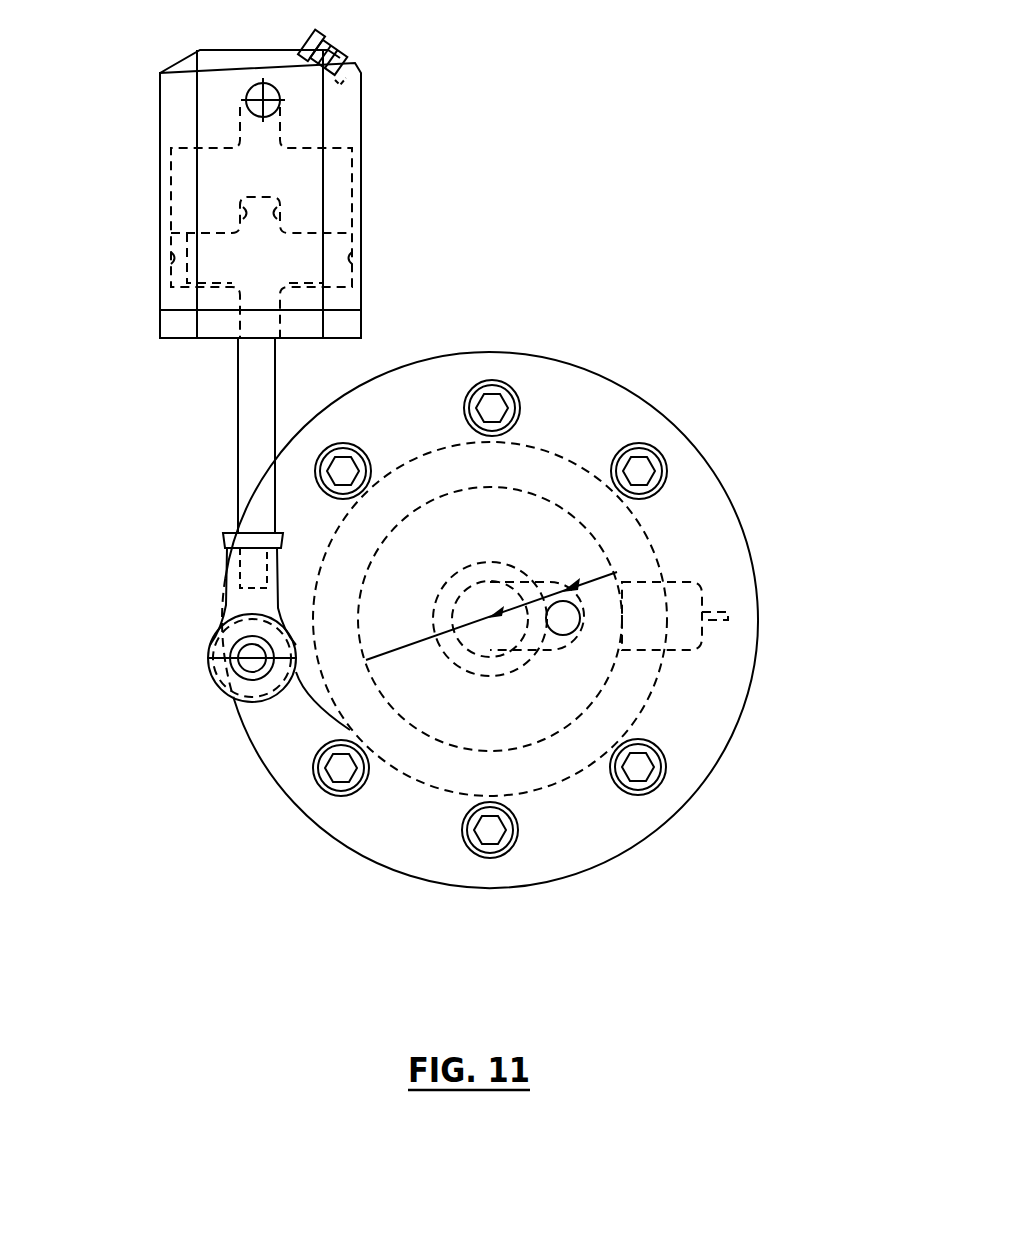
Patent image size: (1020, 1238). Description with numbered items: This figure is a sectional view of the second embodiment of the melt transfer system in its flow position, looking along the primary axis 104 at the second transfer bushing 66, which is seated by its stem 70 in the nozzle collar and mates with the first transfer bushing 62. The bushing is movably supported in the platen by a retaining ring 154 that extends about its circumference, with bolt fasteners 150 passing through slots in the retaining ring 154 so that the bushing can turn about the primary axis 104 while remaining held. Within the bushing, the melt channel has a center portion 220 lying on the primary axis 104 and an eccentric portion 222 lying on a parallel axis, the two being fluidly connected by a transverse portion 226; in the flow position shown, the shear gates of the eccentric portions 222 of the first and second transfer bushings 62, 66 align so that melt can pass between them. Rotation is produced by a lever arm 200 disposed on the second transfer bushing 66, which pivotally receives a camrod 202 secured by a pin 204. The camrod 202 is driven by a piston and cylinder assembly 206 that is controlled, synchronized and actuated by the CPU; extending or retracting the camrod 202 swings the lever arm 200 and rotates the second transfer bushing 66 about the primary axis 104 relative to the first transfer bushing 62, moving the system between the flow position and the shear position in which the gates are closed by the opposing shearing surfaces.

The piston and cylinder assembly 206 is at (358, 212).
The camrod 202 is at (258, 413).
The pin 204 is at (253, 652).
The lever arm 200 is at (303, 675).
The bolt fasteners 150 is at (501, 410).
The stems 70 is at (512, 562).
The retaining rings 154 is at (677, 523).
The primary axis 104 is at (566, 590).
The eccentric portion 222 is at (565, 620).
The transverse portion 226 is at (535, 638).
The first transfer bushing 62 is at (521, 772).
The second transfer bushing 66 is at (393, 750).
The center portion 220 is at (488, 637).